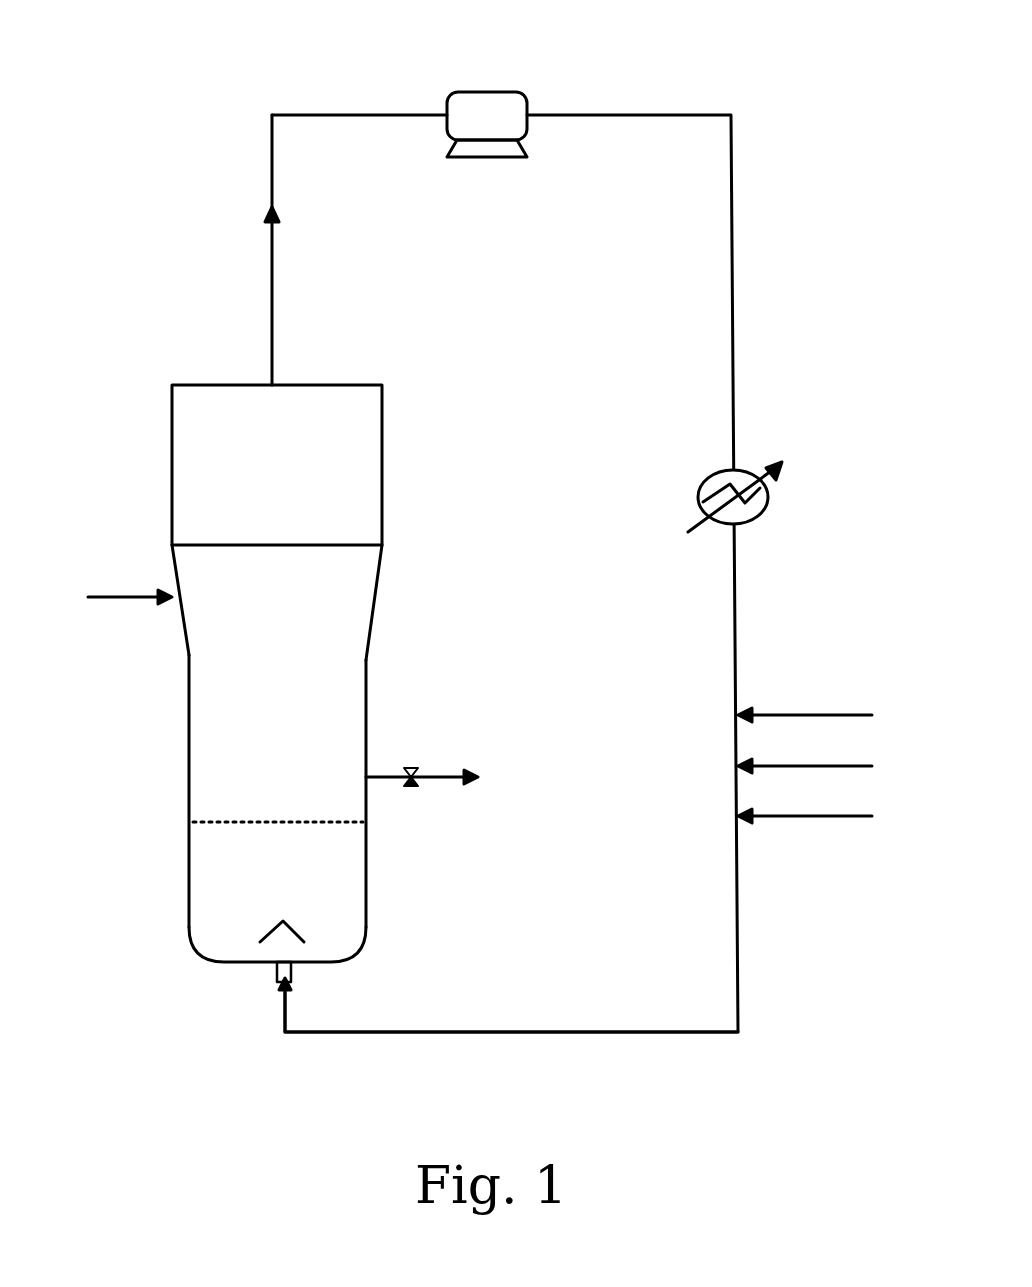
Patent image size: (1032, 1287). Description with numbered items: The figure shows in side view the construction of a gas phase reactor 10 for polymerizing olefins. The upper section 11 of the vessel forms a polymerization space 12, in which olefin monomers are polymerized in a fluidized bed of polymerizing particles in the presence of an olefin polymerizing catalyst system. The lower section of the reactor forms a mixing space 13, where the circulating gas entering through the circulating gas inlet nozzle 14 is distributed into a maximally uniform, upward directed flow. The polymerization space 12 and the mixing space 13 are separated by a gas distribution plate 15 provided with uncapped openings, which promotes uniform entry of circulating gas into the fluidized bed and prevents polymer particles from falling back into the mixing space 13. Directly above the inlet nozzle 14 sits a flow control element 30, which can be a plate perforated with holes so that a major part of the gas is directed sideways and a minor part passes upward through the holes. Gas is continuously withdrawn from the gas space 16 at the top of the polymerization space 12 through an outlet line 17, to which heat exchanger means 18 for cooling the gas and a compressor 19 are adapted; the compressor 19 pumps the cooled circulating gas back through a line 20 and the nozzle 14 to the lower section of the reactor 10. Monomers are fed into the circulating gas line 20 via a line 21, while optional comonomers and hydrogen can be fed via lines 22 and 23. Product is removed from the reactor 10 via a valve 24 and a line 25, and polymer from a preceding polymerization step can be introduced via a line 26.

The gas phase reactor 10 is at (438, 495).
The upper section 11 is at (188, 652).
The polymerization space 12 is at (323, 697).
The mixing space 13 is at (340, 916).
The circulating gas inlet nozzle 14 is at (272, 970).
The gas distribution plate 15 is at (333, 823).
The gas space 16 is at (200, 458).
The outlet line 17 is at (272, 340).
The heat exchanger means 18 is at (765, 512).
The compressor 19 is at (494, 92).
The line 20 is at (358, 1035).
The line 21 is at (765, 707).
The line 22 is at (776, 760).
The line 23 is at (783, 807).
The valve 24 is at (411, 768).
The line 25 is at (443, 780).
The line 26 is at (120, 592).
The flow control element 30 is at (272, 934).